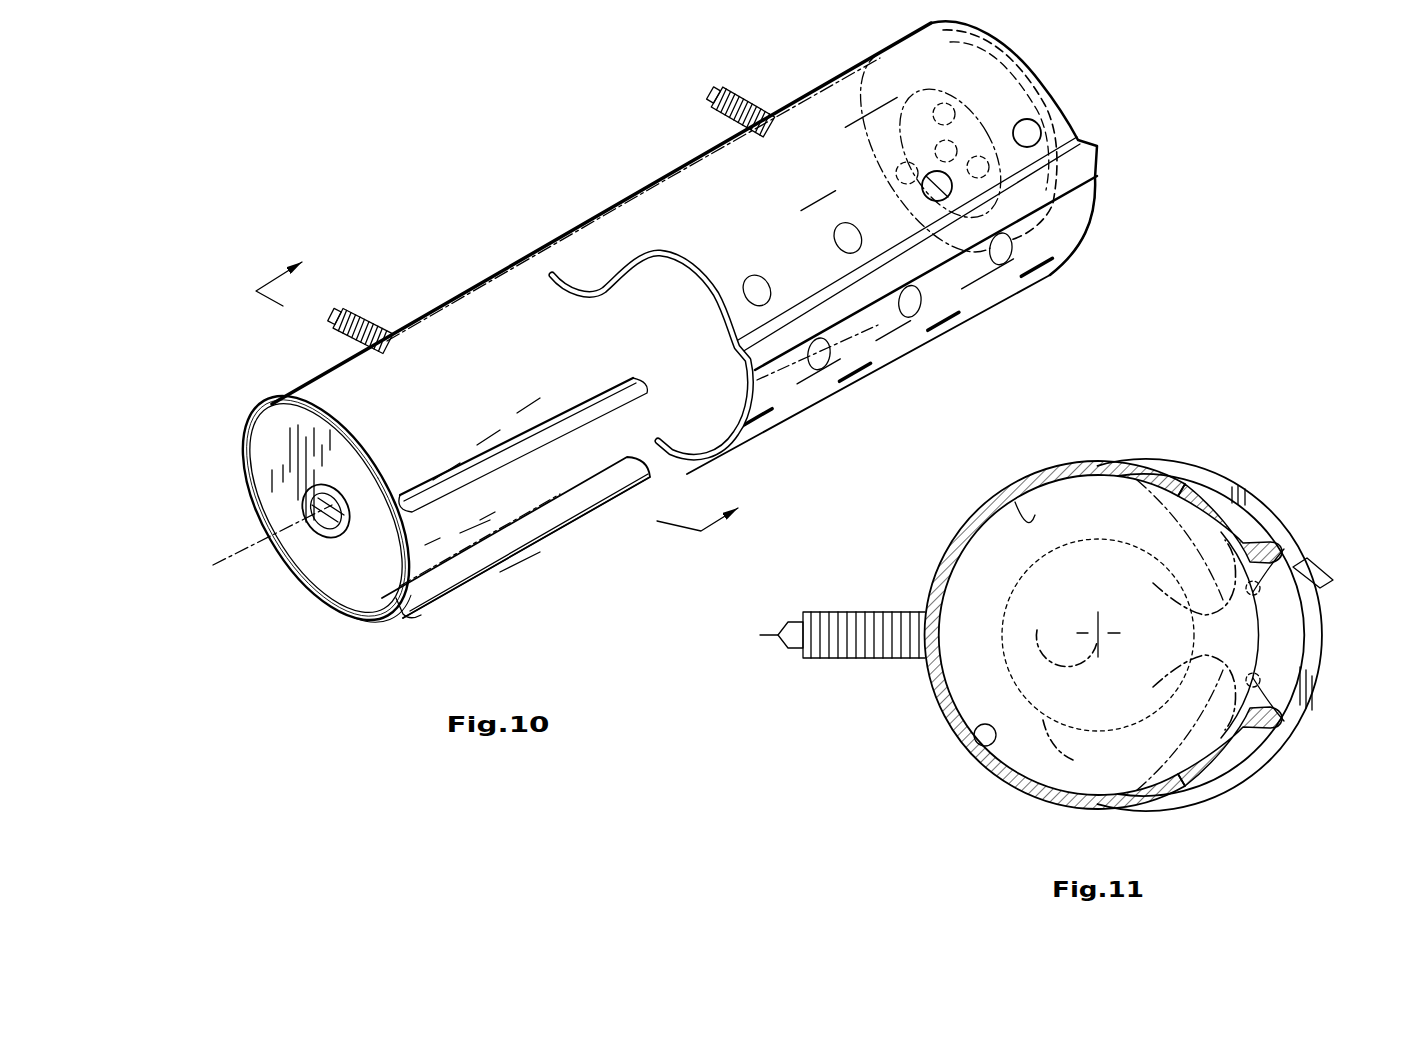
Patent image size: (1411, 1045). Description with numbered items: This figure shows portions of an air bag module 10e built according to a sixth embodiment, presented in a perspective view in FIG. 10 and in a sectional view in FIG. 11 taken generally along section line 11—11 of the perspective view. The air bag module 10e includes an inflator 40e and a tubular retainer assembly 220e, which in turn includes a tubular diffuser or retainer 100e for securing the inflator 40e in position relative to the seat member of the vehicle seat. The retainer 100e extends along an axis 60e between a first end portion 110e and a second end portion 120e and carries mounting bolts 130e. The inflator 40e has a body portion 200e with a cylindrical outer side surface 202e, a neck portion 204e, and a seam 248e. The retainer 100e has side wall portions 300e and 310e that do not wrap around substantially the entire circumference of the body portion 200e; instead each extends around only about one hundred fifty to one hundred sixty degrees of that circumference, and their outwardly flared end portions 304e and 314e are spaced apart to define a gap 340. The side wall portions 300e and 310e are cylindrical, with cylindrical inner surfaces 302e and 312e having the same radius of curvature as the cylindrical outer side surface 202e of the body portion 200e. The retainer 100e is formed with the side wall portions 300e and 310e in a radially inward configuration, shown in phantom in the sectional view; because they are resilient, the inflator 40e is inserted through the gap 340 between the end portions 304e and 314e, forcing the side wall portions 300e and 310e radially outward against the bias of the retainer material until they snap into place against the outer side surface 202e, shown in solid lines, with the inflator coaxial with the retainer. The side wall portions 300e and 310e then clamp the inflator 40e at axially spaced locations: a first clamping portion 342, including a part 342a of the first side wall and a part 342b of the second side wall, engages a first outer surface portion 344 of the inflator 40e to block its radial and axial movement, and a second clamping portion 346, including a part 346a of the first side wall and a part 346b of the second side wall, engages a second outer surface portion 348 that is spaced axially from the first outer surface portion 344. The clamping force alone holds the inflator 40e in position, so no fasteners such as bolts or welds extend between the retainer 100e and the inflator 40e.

In FIG. 10, the air bag module 10e is at (437, 155).
In FIG. 11, the air bag module 10e is at (1195, 416).
In FIG. 10, the tubular diffuser or retainer 100e is at (598, 212).
In FIG. 10, the first end portion 110e is at (1103, 160).
In FIG. 10, the second end portion 120e is at (320, 368).
In FIG. 10, the mounting bolts 130e is at (735, 88).
In FIG. 11, the mounting bolts 130e is at (842, 635).
In FIG. 10, the body portion 200e is at (623, 293).
In FIG. 11, the body portion 200e is at (1033, 540).
In FIG. 10, the cylindrical outer side surface 202e is at (670, 303).
In FIG. 11, the cylindrical outer side surface 202e is at (950, 542).
In FIG. 10, the neck portion 204e is at (865, 120).
In FIG. 11, the neck portion 204e is at (1062, 753).
In FIG. 10, the tubular retainer assembly 220e is at (648, 188).
In FIG. 10, the seam 248e is at (1088, 212).
In FIG. 10, the side wall portion 300e is at (529, 463).
In FIG. 11, the side wall portion 300e is at (1063, 468).
In FIG. 11, the cylindrical inner surface 302e is at (1027, 515).
In FIG. 10, the outwardly flared end portion 304e is at (363, 612).
In FIG. 11, the outwardly flared end portion 304e is at (1333, 582).
In FIG. 10, the side wall portion 310e is at (527, 556).
In FIG. 11, the side wall portion 310e is at (987, 777).
In FIG. 11, the cylindrical inner surface 312e is at (973, 723).
In FIG. 10, the outwardly flared end portion 314e is at (407, 612).
In FIG. 11, the outwardly flared end portion 314e is at (1293, 725).
In FIG. 10, the gap 340 is at (483, 517).
In FIG. 11, the gap 340 is at (1280, 600).
In FIG. 10, the first clamping portion 342 is at (368, 428).
In FIG. 10, the part of the first side wall 342a is at (397, 440).
In FIG. 11, the part of the first side wall 342a is at (1243, 510).
In FIG. 10, the part of the second side wall 342b is at (363, 617).
In FIG. 11, the part of the second side wall 342b is at (1053, 800).
In FIG. 10, the first outer surface portion 344 is at (430, 552).
In FIG. 11, the first outer surface portion 344 is at (1300, 690).
In FIG. 10, the second clamping portion 346 is at (583, 327).
In FIG. 10, the part of the first side wall 346a is at (603, 367).
In FIG. 10, the part of the second side wall 346b is at (590, 487).
In FIG. 10, the second outer surface portion 348 is at (637, 427).
In FIG. 10, the inflator 40e is at (282, 460).
In FIG. 11, the inflator 40e is at (1262, 637).
In FIG. 10, the axis 60e is at (242, 542).
In FIG. 11, the axis 60e is at (1098, 635).
In FIG. 10, the section line 11- 11 is at (514, 383).